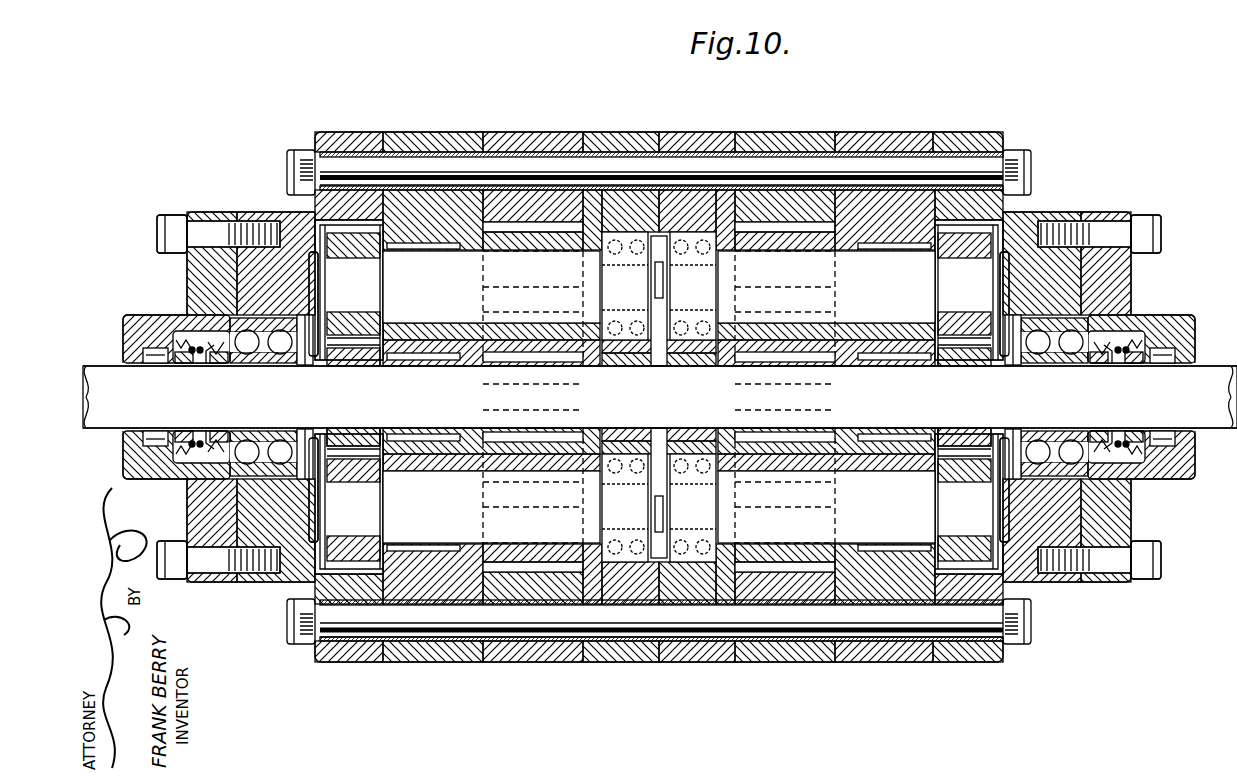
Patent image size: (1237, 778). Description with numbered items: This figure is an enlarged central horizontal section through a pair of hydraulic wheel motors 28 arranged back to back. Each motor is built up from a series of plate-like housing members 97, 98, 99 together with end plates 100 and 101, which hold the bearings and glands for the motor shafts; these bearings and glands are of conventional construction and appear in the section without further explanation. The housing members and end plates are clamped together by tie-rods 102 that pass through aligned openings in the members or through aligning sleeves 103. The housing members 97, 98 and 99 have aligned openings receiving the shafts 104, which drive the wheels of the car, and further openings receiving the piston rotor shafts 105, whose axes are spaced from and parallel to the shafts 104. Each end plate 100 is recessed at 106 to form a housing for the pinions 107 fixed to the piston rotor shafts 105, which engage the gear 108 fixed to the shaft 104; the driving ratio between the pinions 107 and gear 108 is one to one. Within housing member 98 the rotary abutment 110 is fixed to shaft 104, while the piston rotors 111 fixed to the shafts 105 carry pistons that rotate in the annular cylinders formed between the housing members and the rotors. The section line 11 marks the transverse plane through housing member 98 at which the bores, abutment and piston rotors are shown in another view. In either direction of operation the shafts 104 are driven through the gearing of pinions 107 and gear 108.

The section line 11- 11 is at (533, 128).
The motor 28 is at (434, 129).
The housing member 97 is at (439, 662).
The housing member 98 is at (512, 661).
The housing member 99 is at (612, 662).
The end plate 100 is at (351, 662).
The end plate 101 is at (203, 503).
The tie-rod 102 is at (617, 170).
The aligning sleeve 103 is at (787, 152).
The shaft 104 is at (452, 405).
The piston rotor shaft 105 is at (558, 283).
The recess 106 is at (343, 221).
The pinion 107 is at (335, 233).
The gear 108 is at (352, 433).
The rotary abutment 110 is at (543, 354).
The piston rotor 111 is at (770, 236).